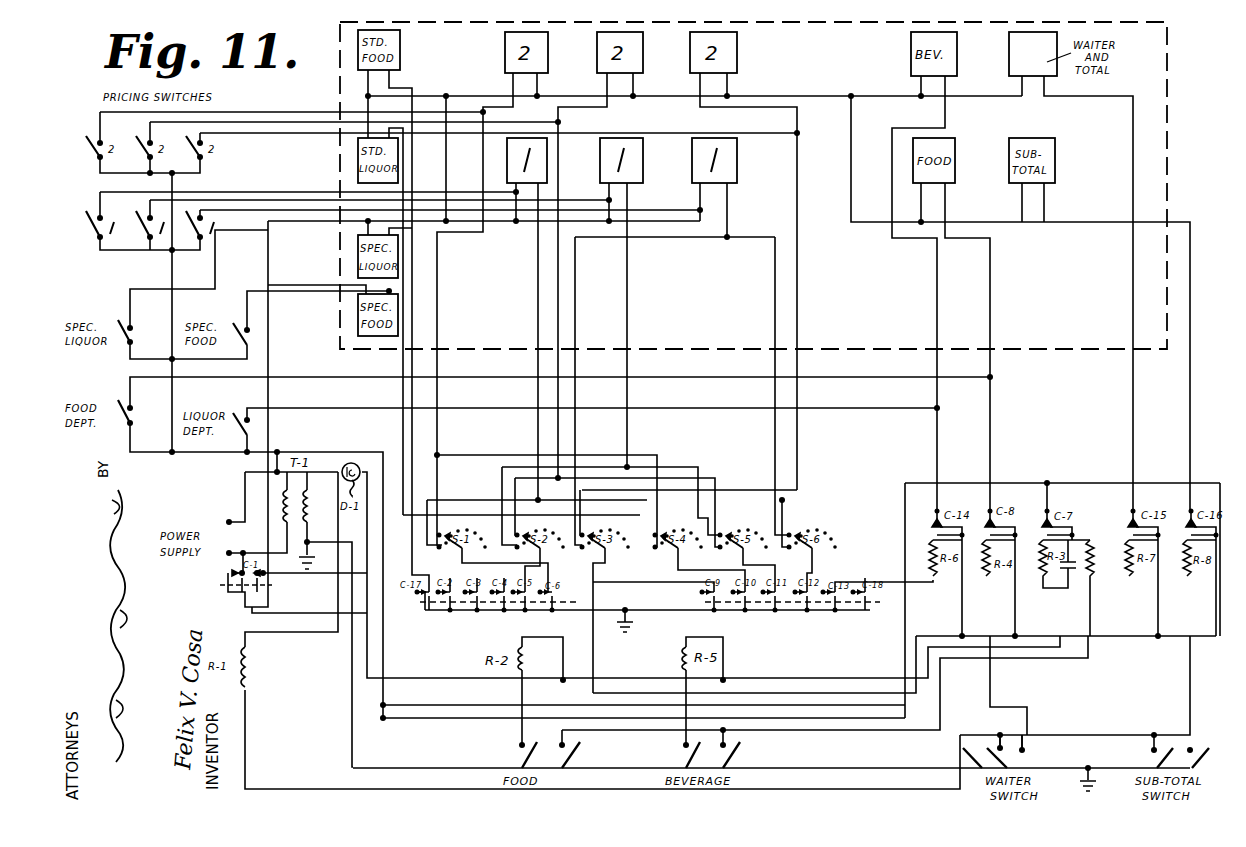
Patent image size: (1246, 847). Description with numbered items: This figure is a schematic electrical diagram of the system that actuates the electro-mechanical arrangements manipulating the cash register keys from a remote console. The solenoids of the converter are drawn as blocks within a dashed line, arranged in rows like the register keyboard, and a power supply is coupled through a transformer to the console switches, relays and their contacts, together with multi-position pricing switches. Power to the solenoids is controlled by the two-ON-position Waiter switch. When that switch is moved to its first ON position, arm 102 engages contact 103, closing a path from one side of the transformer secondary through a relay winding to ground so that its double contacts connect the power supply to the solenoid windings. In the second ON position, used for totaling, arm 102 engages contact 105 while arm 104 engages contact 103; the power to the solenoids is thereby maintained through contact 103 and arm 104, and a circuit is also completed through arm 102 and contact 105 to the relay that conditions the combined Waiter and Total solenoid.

The arm 102 is at (1005, 760).
The contact 103 is at (1004, 744).
The arm 104 is at (972, 758).
The contact 105 is at (1025, 750).